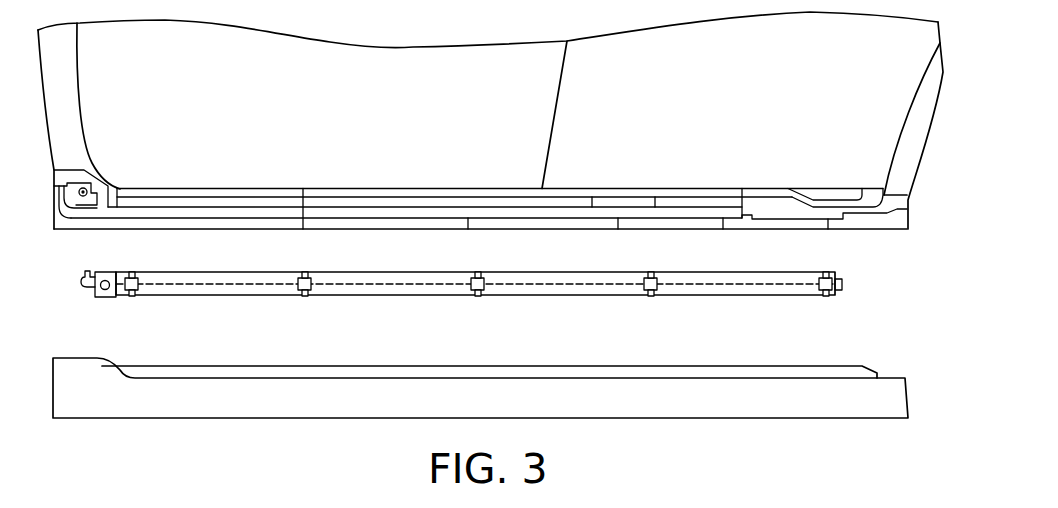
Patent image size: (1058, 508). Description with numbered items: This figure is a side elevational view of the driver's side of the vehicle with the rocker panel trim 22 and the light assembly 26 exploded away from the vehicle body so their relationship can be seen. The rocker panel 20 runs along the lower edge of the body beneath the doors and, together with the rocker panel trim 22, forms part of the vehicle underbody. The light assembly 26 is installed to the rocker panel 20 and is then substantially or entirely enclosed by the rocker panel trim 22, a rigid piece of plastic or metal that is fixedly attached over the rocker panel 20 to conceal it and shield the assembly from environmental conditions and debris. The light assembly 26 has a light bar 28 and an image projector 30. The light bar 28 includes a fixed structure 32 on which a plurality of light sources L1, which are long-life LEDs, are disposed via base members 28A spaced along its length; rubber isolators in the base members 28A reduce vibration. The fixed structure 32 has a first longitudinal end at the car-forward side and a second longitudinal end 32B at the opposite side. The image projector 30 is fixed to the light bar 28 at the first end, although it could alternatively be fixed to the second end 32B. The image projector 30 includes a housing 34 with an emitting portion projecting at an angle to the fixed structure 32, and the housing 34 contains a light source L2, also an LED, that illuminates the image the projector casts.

The rocker panel 20 is at (908, 200).
The rocker panel trim 22 is at (908, 398).
The light assembly 26 is at (496, 297).
The light bar 28 is at (745, 285).
The base members 28A is at (136, 272).
The image projector 30 is at (117, 250).
The fixed structure 32 is at (562, 296).
The second longitudinal end 32B is at (842, 284).
The housing 34 is at (98, 272).
The light sources L1 is at (135, 323).
The light source L2 is at (102, 297).